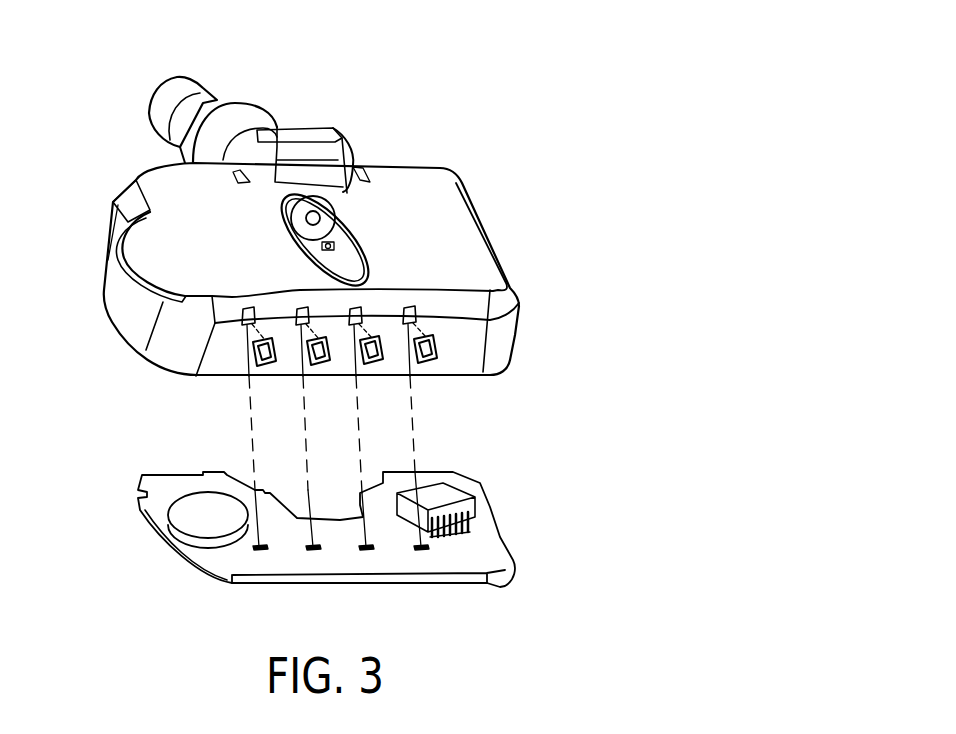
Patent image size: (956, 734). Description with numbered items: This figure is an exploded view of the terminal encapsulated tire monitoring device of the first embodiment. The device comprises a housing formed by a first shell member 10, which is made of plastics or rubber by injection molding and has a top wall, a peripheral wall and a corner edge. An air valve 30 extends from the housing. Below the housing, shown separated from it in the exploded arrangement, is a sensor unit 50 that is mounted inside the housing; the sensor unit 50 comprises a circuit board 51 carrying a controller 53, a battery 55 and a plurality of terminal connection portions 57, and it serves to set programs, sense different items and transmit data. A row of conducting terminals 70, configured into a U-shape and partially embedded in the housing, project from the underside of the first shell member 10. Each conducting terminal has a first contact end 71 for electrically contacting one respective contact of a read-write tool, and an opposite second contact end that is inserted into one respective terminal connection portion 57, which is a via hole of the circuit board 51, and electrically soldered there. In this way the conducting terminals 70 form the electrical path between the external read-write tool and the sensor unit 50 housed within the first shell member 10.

The first shell member 10 is at (512, 192).
The air valve 30 is at (230, 84).
The conducting terminals 70 is at (267, 365).
The first contact end 71 is at (433, 357).
The sensor unit 50 is at (525, 545).
The circuit board 51 is at (195, 562).
The controller 53 is at (460, 494).
The battery 55 is at (187, 515).
The terminal connection portions 57 is at (262, 551).